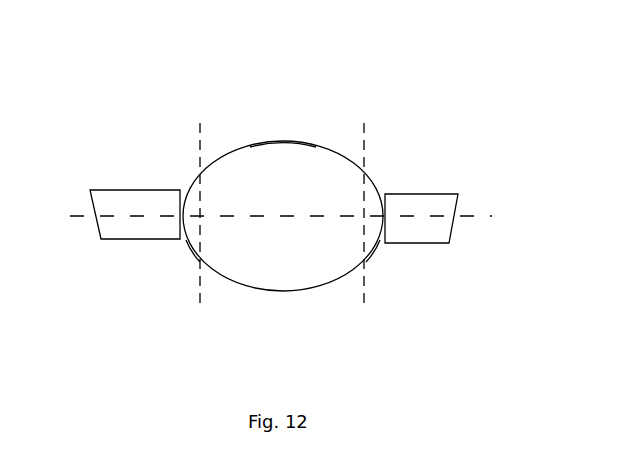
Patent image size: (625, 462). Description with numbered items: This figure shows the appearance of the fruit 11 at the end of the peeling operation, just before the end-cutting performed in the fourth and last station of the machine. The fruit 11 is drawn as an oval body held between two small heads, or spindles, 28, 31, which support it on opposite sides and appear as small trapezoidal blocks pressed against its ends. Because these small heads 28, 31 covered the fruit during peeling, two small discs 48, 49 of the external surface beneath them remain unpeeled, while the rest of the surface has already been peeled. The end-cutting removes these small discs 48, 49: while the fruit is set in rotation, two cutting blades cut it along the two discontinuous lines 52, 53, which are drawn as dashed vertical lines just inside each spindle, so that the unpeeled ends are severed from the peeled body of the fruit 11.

The fruit 11 is at (308, 170).
The small head (spindle) 28 is at (142, 242).
The small head (spindle) 31 is at (437, 250).
The small disc 48 is at (373, 257).
The small disc 49 is at (192, 253).
The discontinuous cutting line 52 is at (200, 138).
The discontinuous cutting line 53 is at (365, 140).